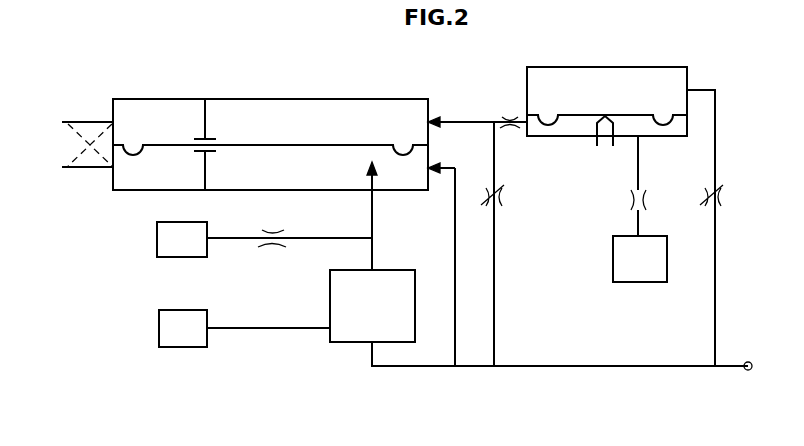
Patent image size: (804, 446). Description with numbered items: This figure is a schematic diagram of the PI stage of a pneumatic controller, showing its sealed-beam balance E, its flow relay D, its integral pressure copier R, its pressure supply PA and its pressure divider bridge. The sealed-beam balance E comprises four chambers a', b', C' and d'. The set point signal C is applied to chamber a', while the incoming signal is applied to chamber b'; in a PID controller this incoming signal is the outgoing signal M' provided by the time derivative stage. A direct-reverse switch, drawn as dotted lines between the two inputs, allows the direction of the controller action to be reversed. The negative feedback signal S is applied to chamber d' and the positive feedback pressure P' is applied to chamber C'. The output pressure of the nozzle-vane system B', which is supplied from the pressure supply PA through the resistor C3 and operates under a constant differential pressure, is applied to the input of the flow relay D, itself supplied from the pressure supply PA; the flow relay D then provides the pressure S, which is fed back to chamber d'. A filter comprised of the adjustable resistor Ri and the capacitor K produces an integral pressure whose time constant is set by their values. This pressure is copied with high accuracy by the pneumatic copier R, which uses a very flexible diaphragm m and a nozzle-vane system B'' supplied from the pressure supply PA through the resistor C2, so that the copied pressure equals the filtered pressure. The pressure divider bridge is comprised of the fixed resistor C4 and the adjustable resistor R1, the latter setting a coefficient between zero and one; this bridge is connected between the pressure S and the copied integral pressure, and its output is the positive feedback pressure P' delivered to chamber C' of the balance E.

The sealed-beam balance E is at (272, 99).
The chamber a' is at (160, 116).
The chamber b' is at (160, 174).
The chamber C' is at (311, 116).
The chamber d' is at (311, 174).
The set point signal C is at (78, 139).
The outgoing signal M' is at (77, 150).
The positive feedback pressure P' is at (477, 114).
The negative feedback signal S is at (597, 260).
The nozzle-vane system B' is at (389, 216).
The fixed resistor C4 is at (508, 118).
The pneumatic copier R is at (585, 68).
The capacitor K is at (605, 95).
The diaphragm m is at (626, 113).
The nozzle-vane system B'' is at (586, 144).
The adjustable resistor R1 is at (502, 197).
The adjustable resistor Ri is at (721, 199).
The resistor C2 is at (630, 200).
The pressure supply PA is at (652, 268).
The resistor C3 is at (270, 246).
The flow relay D is at (378, 314).